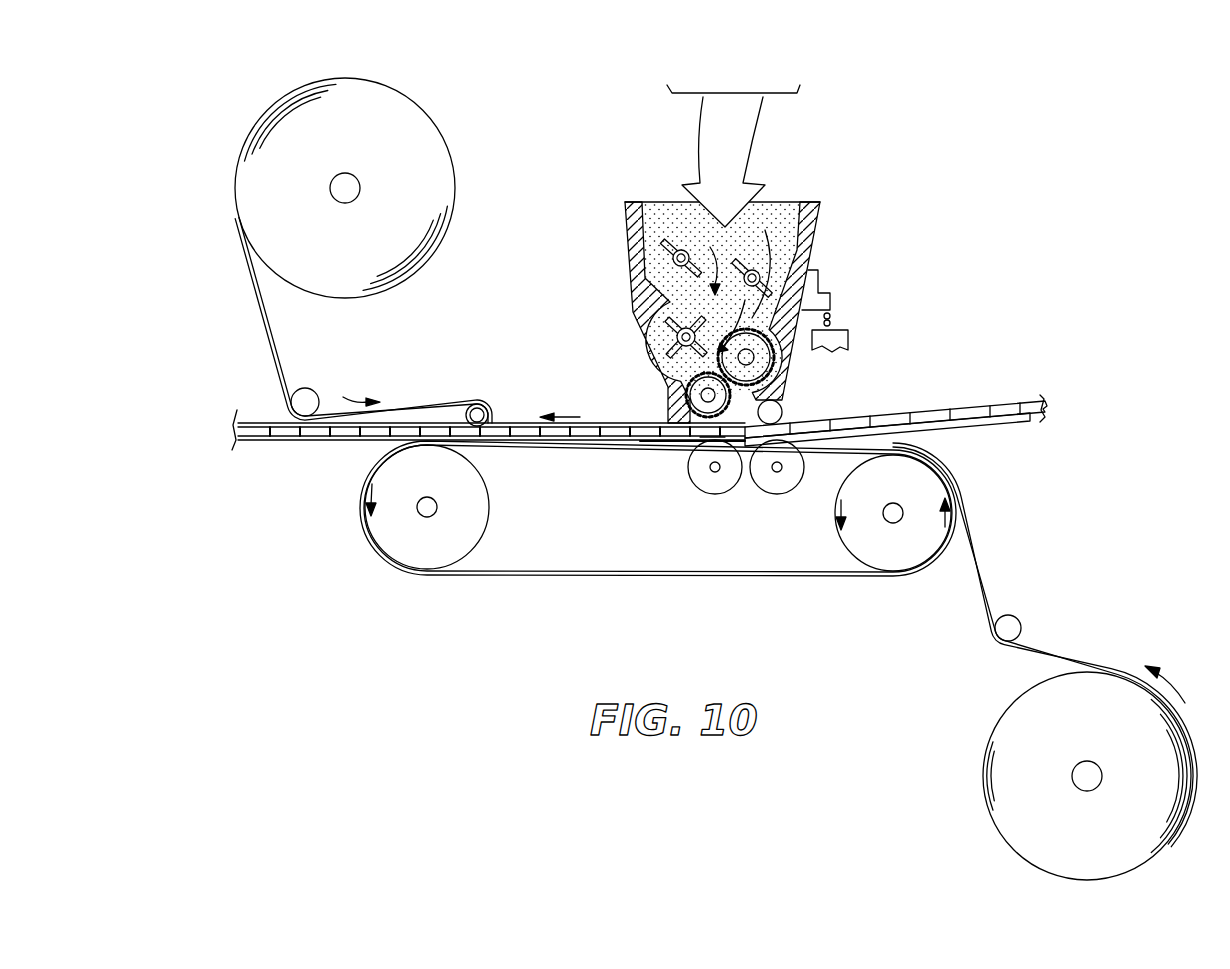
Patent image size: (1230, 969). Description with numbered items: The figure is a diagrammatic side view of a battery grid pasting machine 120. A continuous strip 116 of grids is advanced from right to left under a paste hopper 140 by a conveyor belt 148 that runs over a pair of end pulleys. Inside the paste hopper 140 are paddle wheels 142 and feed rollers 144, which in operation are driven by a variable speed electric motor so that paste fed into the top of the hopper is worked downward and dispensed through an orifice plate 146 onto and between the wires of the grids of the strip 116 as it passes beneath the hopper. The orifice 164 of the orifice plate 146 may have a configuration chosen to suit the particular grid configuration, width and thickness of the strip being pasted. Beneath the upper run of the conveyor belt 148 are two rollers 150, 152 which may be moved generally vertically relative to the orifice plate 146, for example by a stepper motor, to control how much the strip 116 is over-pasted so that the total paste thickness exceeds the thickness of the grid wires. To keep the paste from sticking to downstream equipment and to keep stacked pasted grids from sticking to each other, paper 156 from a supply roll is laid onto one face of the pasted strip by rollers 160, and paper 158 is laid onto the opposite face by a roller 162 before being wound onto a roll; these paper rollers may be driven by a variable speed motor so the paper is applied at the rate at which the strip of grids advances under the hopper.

The pasting machine 120 is at (553, 50).
The paper 156 is at (262, 312).
The rollers 160 is at (473, 413).
The continuous strip 116 is at (521, 412).
The paste hopper 140 is at (830, 220).
The paddle wheels 142 is at (667, 243).
The feed rollers 144 is at (690, 385).
The orifice plate 146 is at (648, 443).
The orifice 164 is at (710, 440).
The conveyor belt 148 is at (515, 574).
The roller 150 is at (709, 495).
The roller 152 is at (775, 495).
The paper 158 is at (977, 552).
The roller 162 is at (1010, 628).